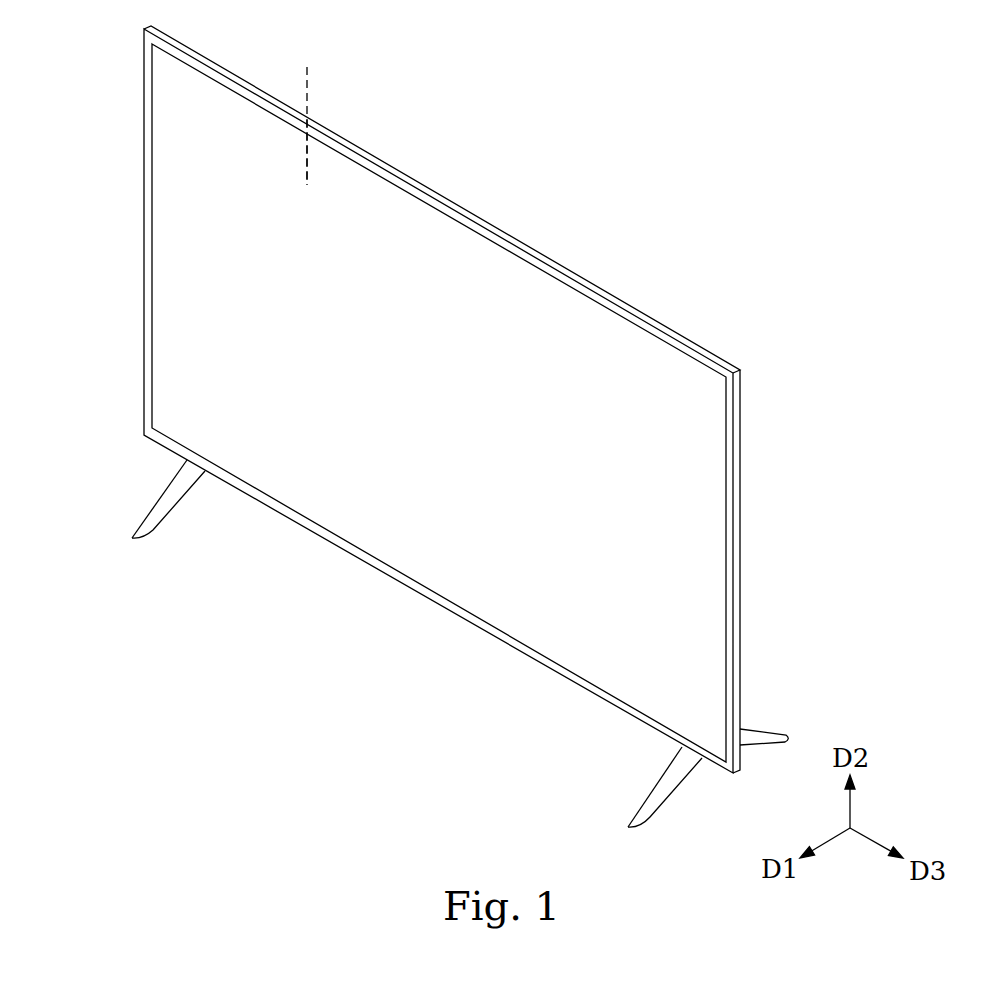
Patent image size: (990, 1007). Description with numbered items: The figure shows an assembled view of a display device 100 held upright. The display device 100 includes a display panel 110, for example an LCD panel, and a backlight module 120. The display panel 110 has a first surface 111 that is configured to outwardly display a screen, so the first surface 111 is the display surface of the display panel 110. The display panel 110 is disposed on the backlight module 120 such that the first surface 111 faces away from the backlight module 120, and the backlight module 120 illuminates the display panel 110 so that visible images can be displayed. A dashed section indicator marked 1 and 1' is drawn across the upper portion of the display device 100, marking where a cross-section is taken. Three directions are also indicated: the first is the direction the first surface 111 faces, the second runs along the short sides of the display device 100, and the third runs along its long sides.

The display device 100 is at (556, 420).
The display panel 110 is at (443, 232).
The first surface 111 is at (443, 542).
The backlight module 120 is at (537, 251).
The section line 1-1' 1 is at (284, 109).
The section line 1- 1' is at (282, 152).